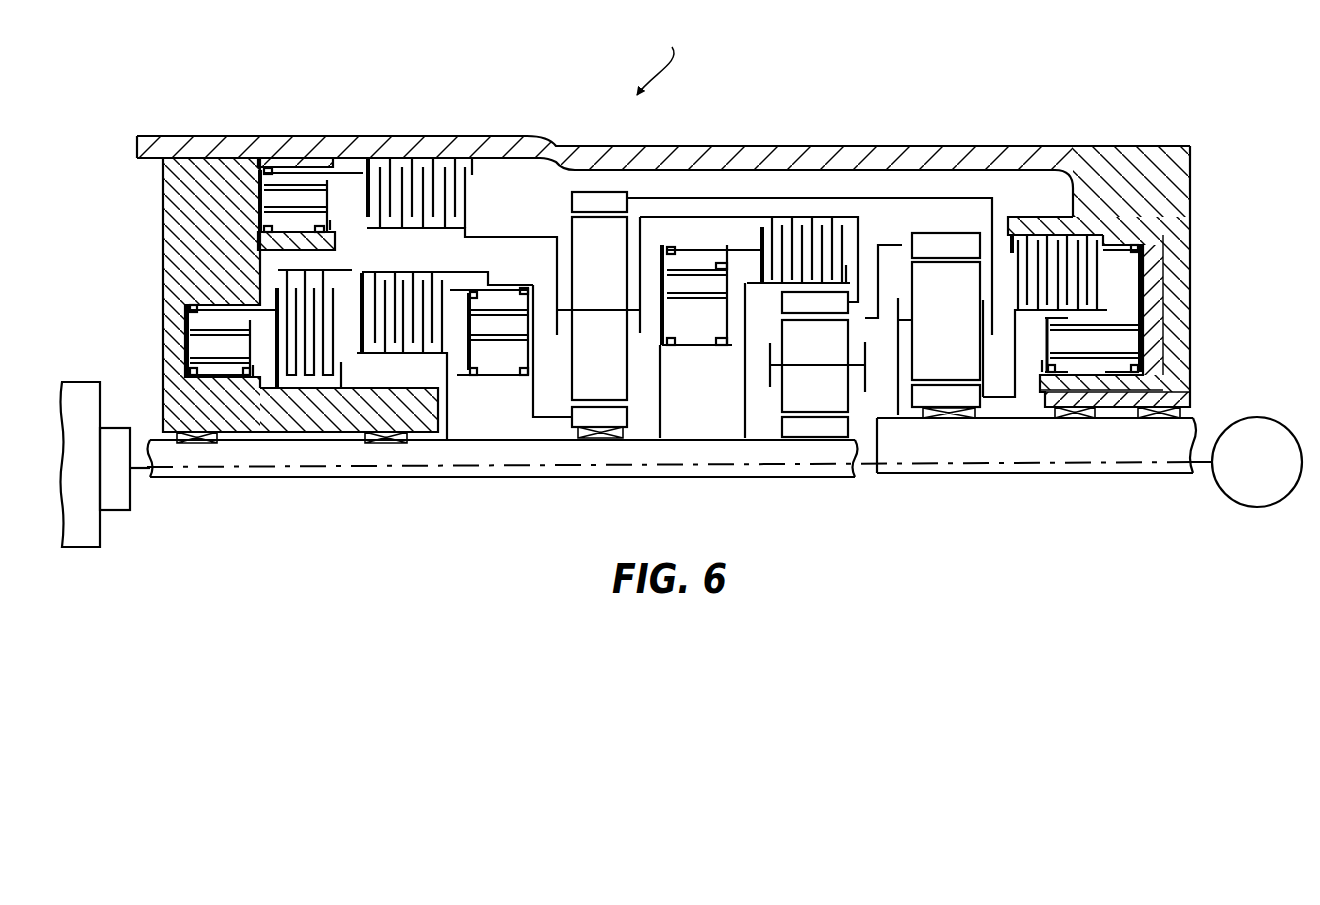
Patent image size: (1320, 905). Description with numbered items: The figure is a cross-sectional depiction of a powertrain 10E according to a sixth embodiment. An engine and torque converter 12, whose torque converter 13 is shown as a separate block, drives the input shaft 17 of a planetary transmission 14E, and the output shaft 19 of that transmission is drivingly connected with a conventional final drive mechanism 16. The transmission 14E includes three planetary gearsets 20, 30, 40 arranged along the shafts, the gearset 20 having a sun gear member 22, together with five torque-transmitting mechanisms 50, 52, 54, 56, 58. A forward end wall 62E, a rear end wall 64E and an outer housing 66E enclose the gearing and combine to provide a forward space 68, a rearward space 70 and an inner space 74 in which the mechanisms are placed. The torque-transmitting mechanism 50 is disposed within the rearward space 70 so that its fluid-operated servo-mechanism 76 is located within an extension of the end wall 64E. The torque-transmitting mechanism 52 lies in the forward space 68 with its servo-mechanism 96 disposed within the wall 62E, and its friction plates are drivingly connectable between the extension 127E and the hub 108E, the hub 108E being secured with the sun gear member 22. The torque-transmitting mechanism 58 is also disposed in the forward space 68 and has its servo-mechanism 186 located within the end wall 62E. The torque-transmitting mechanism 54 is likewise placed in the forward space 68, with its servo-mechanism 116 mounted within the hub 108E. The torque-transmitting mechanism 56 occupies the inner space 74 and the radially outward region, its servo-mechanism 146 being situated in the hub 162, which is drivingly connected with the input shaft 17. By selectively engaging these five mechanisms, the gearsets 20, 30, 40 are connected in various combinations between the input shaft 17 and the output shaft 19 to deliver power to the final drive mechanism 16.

The powertrain 10E is at (163, 113).
The engine and torque converter 12 is at (89, 381).
The torque converter 13 is at (131, 427).
The planetary transmission 14E is at (924, 324).
The final drive mechanism 16 is at (1285, 417).
The input shaft 17 is at (176, 462).
The output shaft 19 is at (1080, 450).
The planetary gearset 20 is at (612, 448).
The sun gear member 22 is at (621, 418).
The planetary gearset 30 is at (818, 441).
The planetary gearset 40 is at (937, 420).
The torque-transmitting mechanism 50 is at (1090, 214).
The torque-transmitting mechanism 52 is at (290, 390).
The torque-transmitting mechanism 54 is at (451, 380).
The torque-transmitting mechanism 56 is at (806, 196).
The torque-transmitting mechanism 58 is at (371, 156).
The end wall 62E is at (163, 265).
The end wall 64E is at (1192, 297).
The transmission housing 66E is at (738, 155).
The forward space 68 is at (403, 266).
The rearward space 70 is at (1017, 214).
The inner space 74 is at (717, 413).
The fluid-operated servo-mechanism 76 is at (1145, 262).
The servo-mechanism 96 is at (182, 342).
The hub 108E is at (513, 285).
The servo-mechanism 116 is at (528, 387).
The extension 127E is at (330, 415).
The servo-mechanism 146 is at (666, 243).
The hub 162 is at (661, 365).
The servo-mechanism 186 is at (262, 165).